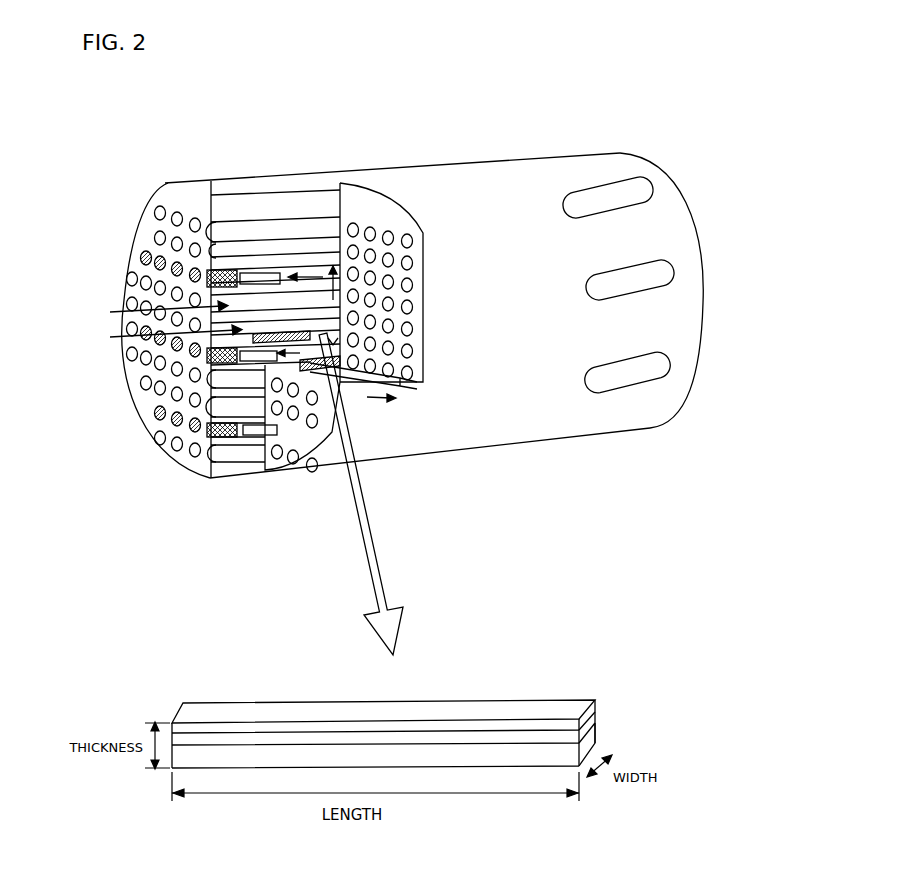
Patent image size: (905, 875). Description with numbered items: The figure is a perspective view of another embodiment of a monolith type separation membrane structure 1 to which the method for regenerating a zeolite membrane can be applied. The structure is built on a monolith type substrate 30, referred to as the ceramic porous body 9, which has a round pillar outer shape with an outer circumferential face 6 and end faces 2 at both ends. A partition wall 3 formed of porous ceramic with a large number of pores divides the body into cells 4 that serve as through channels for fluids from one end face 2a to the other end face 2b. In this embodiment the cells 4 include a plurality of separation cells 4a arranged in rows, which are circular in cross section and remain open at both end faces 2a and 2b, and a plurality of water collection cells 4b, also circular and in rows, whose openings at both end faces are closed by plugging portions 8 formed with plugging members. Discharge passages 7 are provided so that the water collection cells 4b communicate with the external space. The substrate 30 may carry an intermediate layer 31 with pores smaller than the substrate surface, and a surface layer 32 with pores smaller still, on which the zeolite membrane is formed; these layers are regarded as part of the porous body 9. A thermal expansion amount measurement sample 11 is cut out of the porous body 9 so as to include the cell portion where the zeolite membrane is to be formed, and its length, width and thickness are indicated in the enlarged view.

The separation membrane structure 1 is at (522, 68).
The end face 2 is at (420, 315).
The one end face 2a is at (155, 226).
The other end face 2b is at (678, 400).
The partition wall 3 is at (236, 240).
The cells 4 is at (235, 274).
The separation cells 4a is at (310, 225).
The water collection cells 4b is at (331, 300).
The outer circumferential face 6 is at (507, 435).
The discharge passages 7 is at (262, 295).
The plugging portions 8 is at (206, 278).
The ceramic porous body 9 is at (430, 180).
The thermal expansion amount measurement sample 11 is at (284, 335).
The monolith type substrate 30 is at (443, 433).
The intermediate layer 31 is at (596, 718).
The surface layer 32 is at (596, 701).